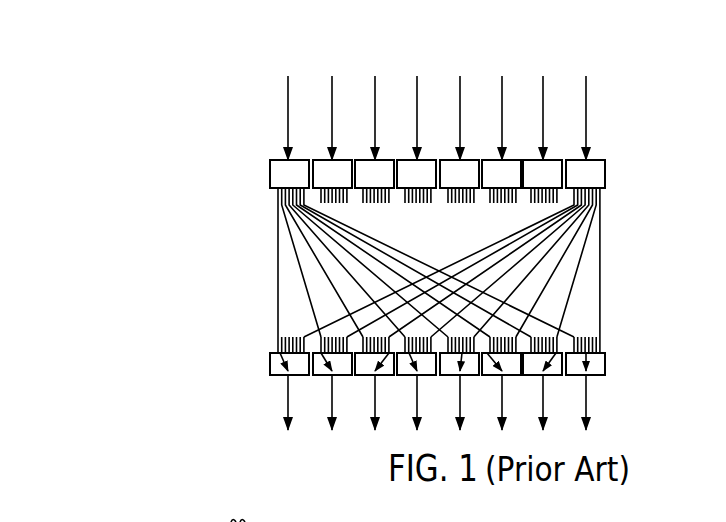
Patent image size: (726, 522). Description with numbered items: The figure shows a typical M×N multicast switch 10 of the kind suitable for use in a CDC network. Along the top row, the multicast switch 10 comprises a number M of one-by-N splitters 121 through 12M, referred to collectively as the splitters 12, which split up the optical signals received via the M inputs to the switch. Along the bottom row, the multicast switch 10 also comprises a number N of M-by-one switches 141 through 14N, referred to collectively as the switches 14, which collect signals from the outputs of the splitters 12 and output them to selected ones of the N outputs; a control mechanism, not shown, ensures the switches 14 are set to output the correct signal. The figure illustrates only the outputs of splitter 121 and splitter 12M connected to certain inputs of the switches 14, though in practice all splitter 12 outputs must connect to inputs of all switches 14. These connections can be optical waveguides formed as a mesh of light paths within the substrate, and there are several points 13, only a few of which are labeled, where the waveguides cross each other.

The multicast switch 10 is at (561, 70).
The splitters 12 is at (240, 172).
The first splitter 121 is at (270, 180).
The M-th splitter 12M is at (605, 172).
The crossing points 13 is at (306, 334).
The switches 14 is at (275, 384).
The first switch 141 is at (270, 364).
The N-th switch 14N is at (605, 364).